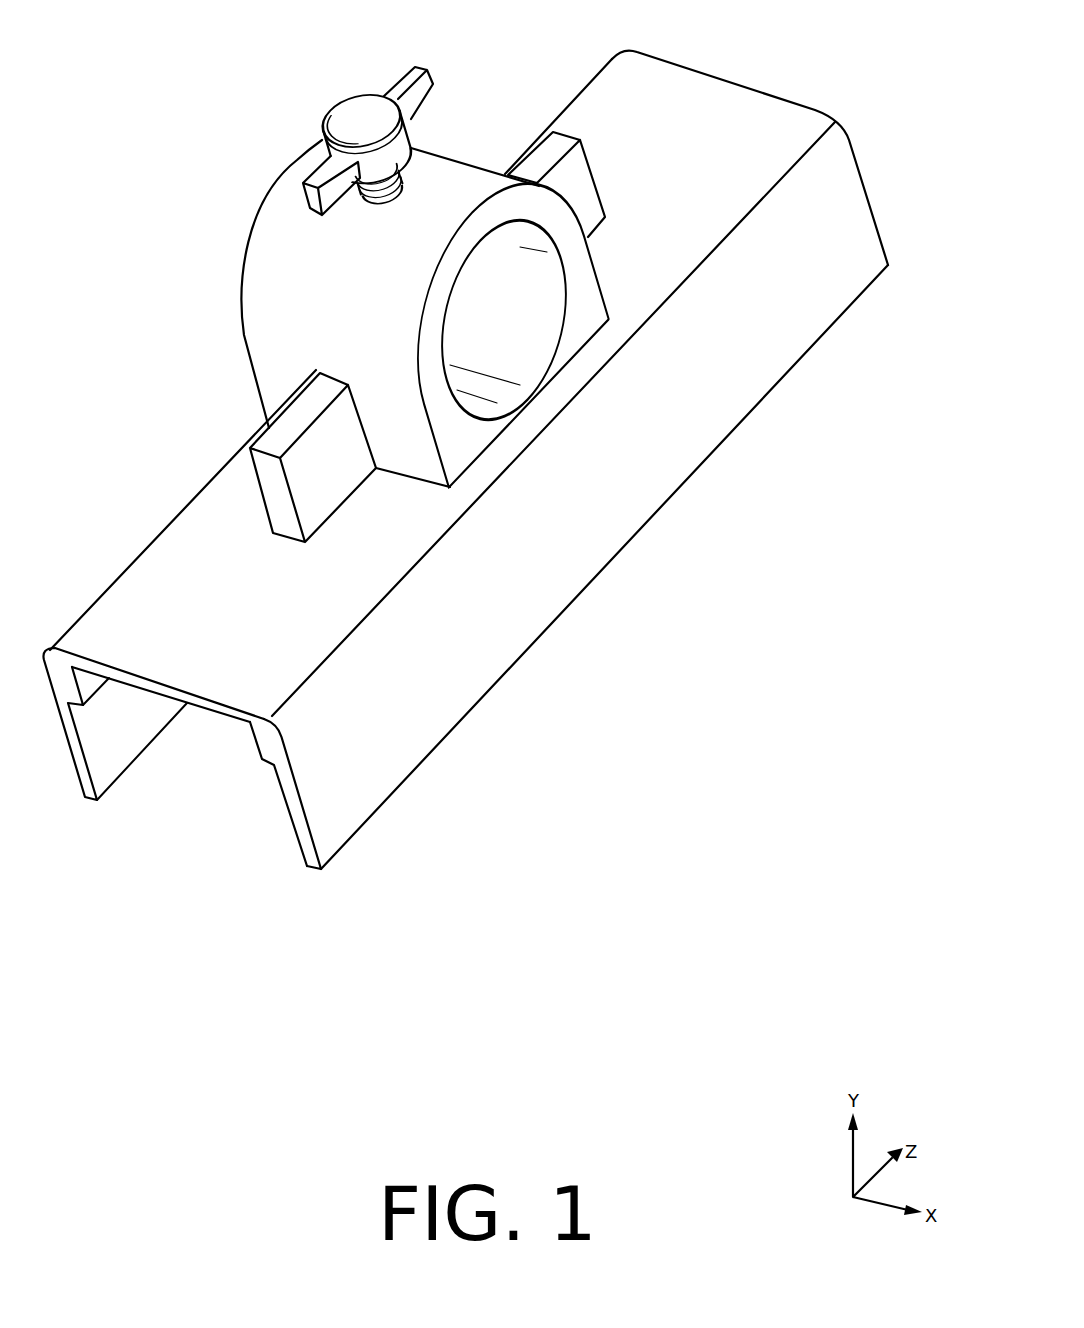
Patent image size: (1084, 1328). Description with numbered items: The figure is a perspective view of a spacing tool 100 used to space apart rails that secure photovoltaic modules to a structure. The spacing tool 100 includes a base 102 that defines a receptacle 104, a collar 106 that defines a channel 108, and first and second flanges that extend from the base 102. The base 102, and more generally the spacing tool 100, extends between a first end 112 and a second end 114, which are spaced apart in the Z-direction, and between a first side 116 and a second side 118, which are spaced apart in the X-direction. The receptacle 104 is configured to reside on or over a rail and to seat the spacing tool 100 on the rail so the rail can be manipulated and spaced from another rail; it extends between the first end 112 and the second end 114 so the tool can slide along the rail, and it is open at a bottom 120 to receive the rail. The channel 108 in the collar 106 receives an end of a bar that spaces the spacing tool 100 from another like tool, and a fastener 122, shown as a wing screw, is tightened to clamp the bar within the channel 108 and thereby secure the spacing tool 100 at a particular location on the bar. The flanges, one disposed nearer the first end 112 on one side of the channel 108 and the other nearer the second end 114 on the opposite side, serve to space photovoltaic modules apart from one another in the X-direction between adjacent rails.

The spacing tool 100 is at (158, 76).
The base 102 is at (860, 233).
The receptacle 104 is at (145, 843).
The collar 106 is at (268, 288).
The channel 108 is at (511, 236).
The first end 112 is at (360, 867).
The second end 114 is at (868, 101).
The first side 116 is at (168, 455).
The second side 118 is at (660, 567).
The bottom 120 is at (280, 890).
The fastener 122 is at (357, 112).